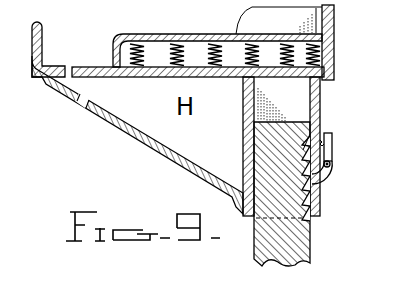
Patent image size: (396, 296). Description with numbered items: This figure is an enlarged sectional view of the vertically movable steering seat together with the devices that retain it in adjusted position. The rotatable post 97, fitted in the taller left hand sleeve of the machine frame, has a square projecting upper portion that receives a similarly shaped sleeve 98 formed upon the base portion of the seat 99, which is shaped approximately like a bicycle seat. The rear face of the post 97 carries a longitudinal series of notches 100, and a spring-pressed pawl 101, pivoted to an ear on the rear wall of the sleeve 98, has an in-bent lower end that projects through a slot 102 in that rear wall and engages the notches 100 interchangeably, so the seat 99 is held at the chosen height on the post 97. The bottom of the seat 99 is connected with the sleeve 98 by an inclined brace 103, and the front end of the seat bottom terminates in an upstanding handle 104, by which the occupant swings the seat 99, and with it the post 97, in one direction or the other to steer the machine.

The rotatable post 97 is at (251, 257).
The sleeve 98 is at (243, 147).
The seat 99 is at (220, 33).
The notches 100 is at (312, 226).
The spring-pressed pawl 101 is at (334, 144).
The slot 102 is at (320, 187).
The inclined brace 103 is at (135, 146).
The upstanding handle 104 is at (43, 35).